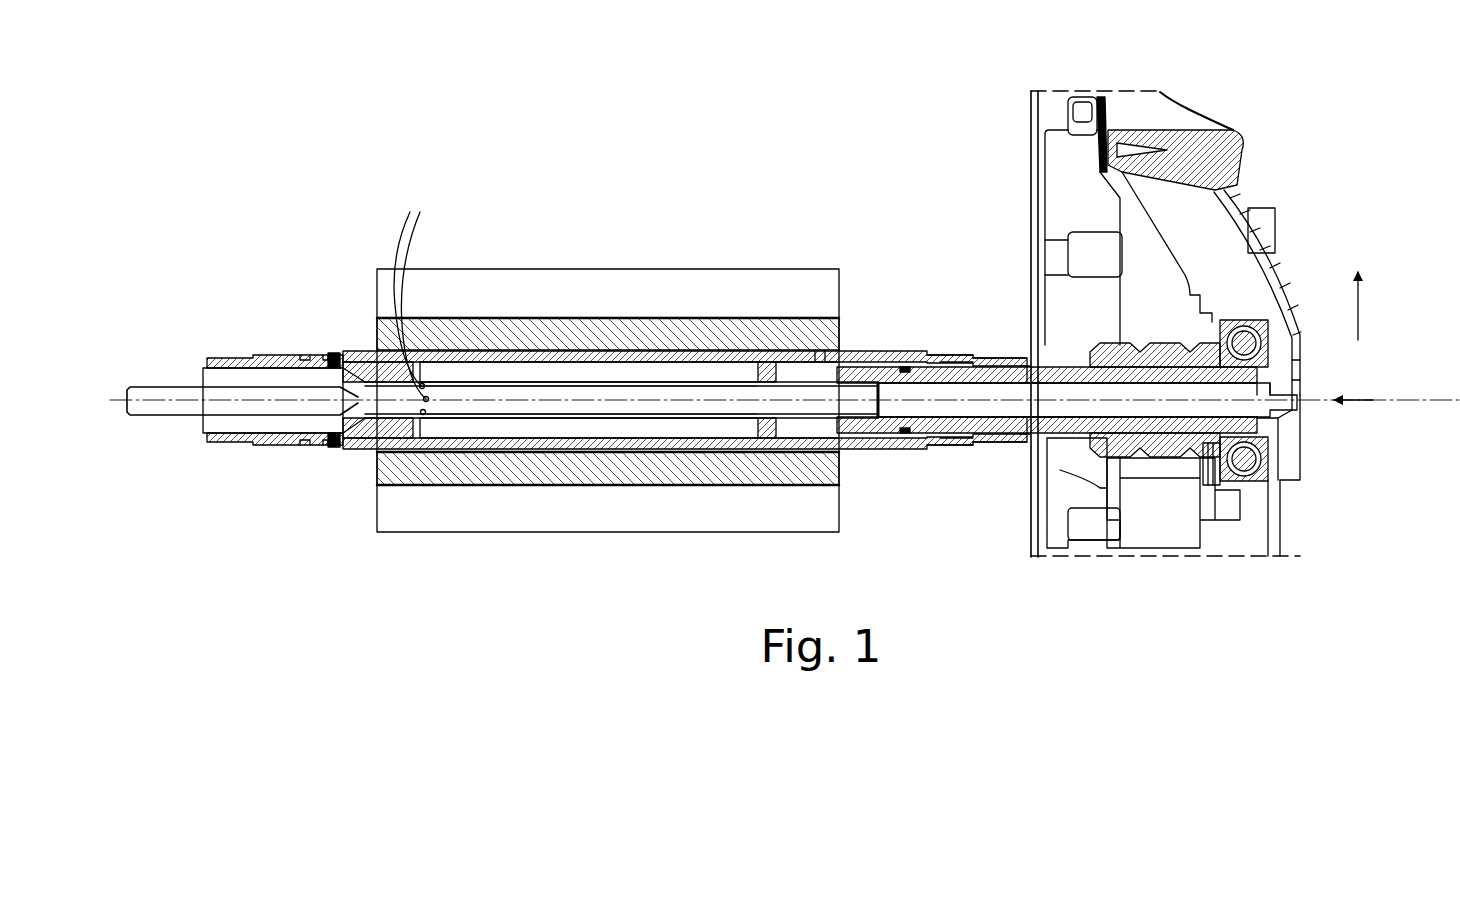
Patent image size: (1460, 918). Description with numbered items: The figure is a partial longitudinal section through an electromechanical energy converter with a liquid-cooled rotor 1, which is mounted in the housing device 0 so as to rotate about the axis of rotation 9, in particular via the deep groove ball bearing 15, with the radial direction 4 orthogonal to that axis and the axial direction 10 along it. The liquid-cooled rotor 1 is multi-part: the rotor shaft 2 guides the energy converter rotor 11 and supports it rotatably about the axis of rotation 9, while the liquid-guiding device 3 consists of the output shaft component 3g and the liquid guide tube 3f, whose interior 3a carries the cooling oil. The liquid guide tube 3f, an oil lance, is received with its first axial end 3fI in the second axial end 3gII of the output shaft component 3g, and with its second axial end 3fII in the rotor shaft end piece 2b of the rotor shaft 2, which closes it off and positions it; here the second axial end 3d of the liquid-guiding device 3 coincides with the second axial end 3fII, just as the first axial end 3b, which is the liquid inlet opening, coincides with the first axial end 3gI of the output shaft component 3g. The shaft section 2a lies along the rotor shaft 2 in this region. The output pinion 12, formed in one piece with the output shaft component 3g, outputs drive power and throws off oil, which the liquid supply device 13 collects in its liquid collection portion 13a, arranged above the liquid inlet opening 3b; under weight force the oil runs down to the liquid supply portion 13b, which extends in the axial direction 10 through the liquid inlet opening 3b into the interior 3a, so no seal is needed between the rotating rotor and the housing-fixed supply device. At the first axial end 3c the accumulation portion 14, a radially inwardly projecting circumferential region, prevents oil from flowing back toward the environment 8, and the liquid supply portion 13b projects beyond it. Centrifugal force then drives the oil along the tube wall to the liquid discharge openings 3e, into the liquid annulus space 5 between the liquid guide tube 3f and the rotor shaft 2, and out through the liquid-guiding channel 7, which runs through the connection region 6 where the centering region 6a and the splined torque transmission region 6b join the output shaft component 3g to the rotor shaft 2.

The housing device 0 is at (1245, 140).
The liquid-cooled rotor 1 is at (362, 330).
The rotor shaft 2 is at (857, 362).
The shaft section 2a is at (1025, 360).
The rotor shaft end piece 2b is at (300, 352).
The liquid-guiding device 3 is at (818, 440).
The interior of the liquid-guiding device 3a is at (565, 408).
The liquid inlet opening 3b is at (1300, 378).
The first axial end 3c is at (1293, 440).
The second axial end of the liquid-guiding device 3d is at (351, 452).
The liquid discharge openings 3e is at (417, 296).
The liquid guide tube 3f is at (685, 418).
The first axial end of the liquid guide tube 3fI is at (838, 432).
The second axial end of the liquid guide tube 3fII is at (340, 422).
The output shaft component 3g is at (1025, 455).
The first axial end of the output shaft component 3gI is at (1270, 425).
The second axial end of the output shaft component 3gII is at (815, 352).
The radial direction 4 is at (1360, 290).
The liquid annulus space 5 is at (478, 432).
The connection region 6 is at (943, 345).
The centering region 6a is at (945, 445).
The torque transmission region 6b is at (895, 368).
The liquid-guiding channel 7 is at (1005, 447).
The environment 8 is at (1014, 216).
The axis of rotation 9 is at (125, 404).
The axial direction 10 is at (1372, 396).
The energy converter rotor 11 is at (745, 316).
The output pinion 12 is at (1176, 458).
The liquid supply device 13 is at (1238, 203).
The liquid collection portion 13a is at (1190, 172).
The liquid supply portion 13b is at (1290, 412).
The accumulation portion 14 is at (1262, 480).
The deep groove ball bearing 15 is at (1270, 482).